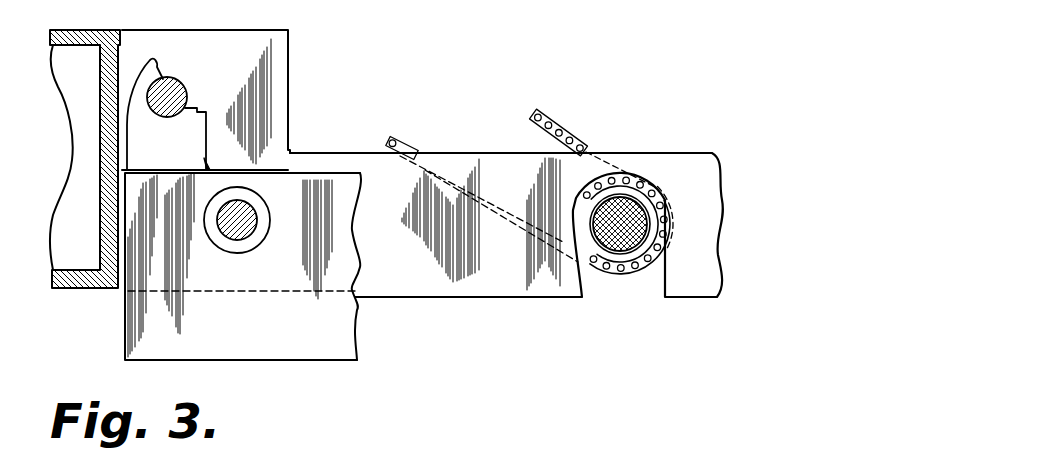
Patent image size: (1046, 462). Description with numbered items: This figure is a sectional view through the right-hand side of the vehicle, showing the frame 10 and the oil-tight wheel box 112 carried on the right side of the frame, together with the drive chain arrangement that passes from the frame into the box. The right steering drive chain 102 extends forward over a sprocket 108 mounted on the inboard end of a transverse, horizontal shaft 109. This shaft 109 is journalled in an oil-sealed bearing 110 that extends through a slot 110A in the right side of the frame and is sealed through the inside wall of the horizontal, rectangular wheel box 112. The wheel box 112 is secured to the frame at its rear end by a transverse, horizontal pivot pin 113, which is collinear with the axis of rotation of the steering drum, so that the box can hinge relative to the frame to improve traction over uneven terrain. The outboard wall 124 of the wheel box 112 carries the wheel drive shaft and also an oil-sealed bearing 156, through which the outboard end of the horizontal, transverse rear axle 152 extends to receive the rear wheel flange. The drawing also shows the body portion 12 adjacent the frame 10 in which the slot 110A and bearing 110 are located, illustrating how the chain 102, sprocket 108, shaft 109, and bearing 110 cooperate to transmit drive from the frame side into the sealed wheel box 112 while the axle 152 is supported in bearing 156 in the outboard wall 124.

The frame wall 10 is at (47, 161).
The support arm 12 is at (331, 147).
The right steering drive chain 102 is at (562, 130).
The sprocket 108 is at (616, 272).
The shaft 109 is at (626, 226).
The oil-sealed bearing 110 is at (648, 201).
The slot 110A is at (664, 283).
The wheel box 112 is at (235, 315).
The pivot pin 113 is at (176, 92).
The outboard wall 124 is at (352, 328).
The rear axle 152 is at (243, 230).
The oil-sealed bearing 156 is at (223, 240).